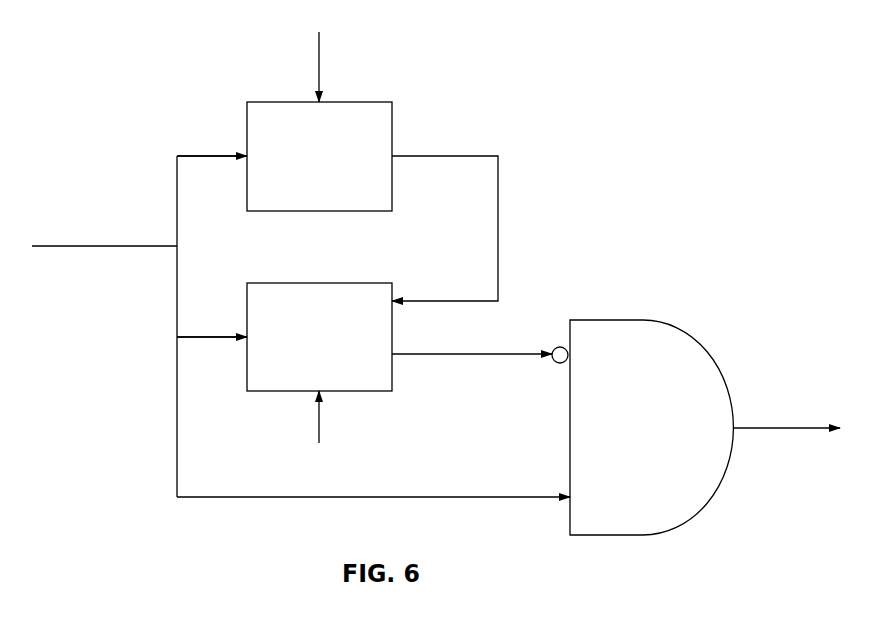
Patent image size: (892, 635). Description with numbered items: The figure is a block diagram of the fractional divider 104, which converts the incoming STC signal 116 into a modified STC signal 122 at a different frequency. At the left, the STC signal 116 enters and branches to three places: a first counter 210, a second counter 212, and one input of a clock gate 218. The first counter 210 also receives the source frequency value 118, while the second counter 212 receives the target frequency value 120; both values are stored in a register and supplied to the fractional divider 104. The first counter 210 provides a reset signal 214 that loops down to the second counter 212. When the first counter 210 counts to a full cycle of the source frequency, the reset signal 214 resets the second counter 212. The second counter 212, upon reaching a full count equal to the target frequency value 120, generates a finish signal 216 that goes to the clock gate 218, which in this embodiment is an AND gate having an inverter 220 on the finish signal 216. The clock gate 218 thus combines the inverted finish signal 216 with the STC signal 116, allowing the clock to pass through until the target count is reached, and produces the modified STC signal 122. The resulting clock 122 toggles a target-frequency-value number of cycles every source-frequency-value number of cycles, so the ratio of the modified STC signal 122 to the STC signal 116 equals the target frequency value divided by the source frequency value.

The fractional divider 104 is at (563, 88).
The STC signal 116 is at (93, 246).
The source frequency value 118 is at (319, 417).
The target frequency value 120 is at (319, 57).
The modified STC signal 122 is at (758, 428).
The first counter 210 is at (392, 124).
The second counter 212 is at (273, 283).
The reset signal 214 is at (498, 198).
The finish signal 216 is at (443, 354).
The clock gate 218 is at (587, 320).
The inverter 220 is at (558, 346).